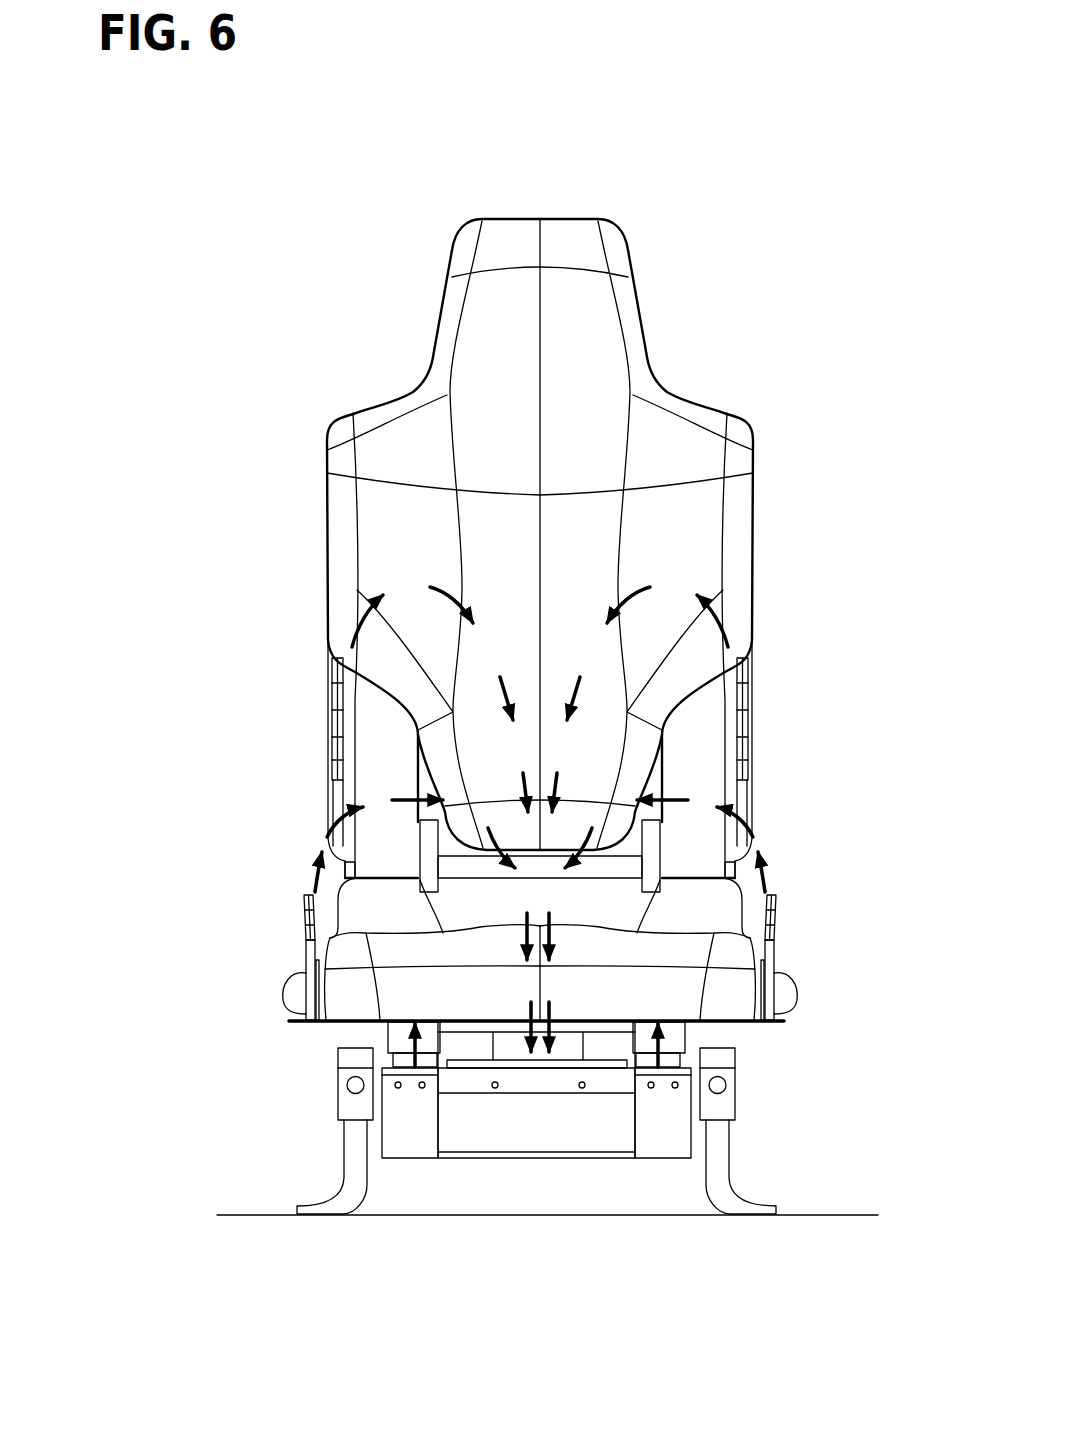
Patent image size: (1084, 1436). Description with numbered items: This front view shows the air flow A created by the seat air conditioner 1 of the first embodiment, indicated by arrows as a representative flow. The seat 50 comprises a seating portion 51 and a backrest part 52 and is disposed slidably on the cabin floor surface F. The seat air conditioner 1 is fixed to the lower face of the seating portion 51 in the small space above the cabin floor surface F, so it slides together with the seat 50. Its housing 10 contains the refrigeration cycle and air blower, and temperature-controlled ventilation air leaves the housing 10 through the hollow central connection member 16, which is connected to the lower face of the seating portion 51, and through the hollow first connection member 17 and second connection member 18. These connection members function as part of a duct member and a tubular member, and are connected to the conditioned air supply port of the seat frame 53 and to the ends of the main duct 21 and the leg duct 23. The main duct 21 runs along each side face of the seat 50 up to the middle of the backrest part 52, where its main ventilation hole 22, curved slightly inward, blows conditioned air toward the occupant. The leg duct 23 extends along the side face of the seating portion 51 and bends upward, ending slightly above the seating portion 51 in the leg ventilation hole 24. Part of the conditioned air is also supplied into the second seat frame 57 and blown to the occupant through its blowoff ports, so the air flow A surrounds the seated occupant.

The seat air conditioner 1 is at (652, 1182).
The housing 10 is at (408, 1159).
The central connection member 16 is at (512, 1043).
The first connection member 17 is at (400, 1042).
The second connection member 18 is at (678, 1040).
The main duct 21 is at (332, 698).
The main ventilation hole 22 is at (333, 668).
The leg duct 23 is at (290, 993).
The leg ventilation hole 24 is at (303, 897).
The seat 50 is at (356, 296).
The seating portion 51 is at (716, 995).
The backrest part 52 is at (633, 352).
The seat frame 53 is at (358, 747).
The second seat frame 57 is at (385, 785).
The air flow A is at (337, 617).
The cabin floor surface F is at (836, 1215).